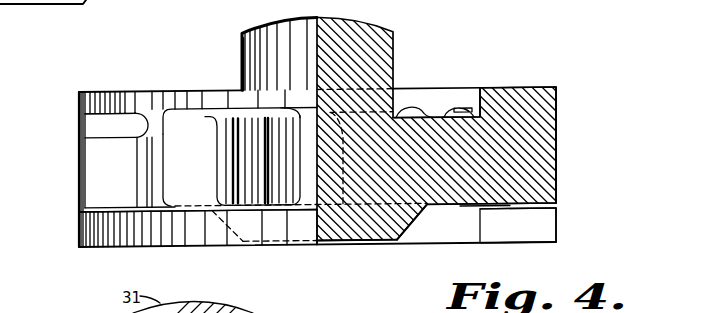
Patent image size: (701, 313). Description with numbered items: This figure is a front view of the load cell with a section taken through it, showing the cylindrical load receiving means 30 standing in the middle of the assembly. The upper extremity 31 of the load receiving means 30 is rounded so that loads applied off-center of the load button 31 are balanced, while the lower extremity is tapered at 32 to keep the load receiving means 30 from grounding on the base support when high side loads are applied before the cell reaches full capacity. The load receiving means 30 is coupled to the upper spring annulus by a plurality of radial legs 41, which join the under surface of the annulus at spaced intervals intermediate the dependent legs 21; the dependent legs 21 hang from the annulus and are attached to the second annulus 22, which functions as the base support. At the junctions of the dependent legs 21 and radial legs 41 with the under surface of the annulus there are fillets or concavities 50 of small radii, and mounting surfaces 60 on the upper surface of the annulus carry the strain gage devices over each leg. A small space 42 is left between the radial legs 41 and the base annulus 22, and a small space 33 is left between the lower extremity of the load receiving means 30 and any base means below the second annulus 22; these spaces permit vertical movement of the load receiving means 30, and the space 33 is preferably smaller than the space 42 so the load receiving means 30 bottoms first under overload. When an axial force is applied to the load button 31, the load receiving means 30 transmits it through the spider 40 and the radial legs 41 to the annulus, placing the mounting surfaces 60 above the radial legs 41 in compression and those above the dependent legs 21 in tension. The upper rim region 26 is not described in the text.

The dependent legs 21 is at (135, 176).
The second annulus 22 is at (80, 238).
The upper rim of first member 26 is at (81, 98).
The load receiving means 30 is at (241, 55).
The upper extremity 31 is at (305, 16).
The tapered lower extremity 32 is at (240, 240).
The small space 33 is at (359, 243).
The spider 40 is at (438, 110).
The radial legs 41 is at (80, 162).
The small space 42 is at (82, 209).
The fillets or concavities 50 is at (140, 122).
The mounting surfaces 60 is at (510, 86).